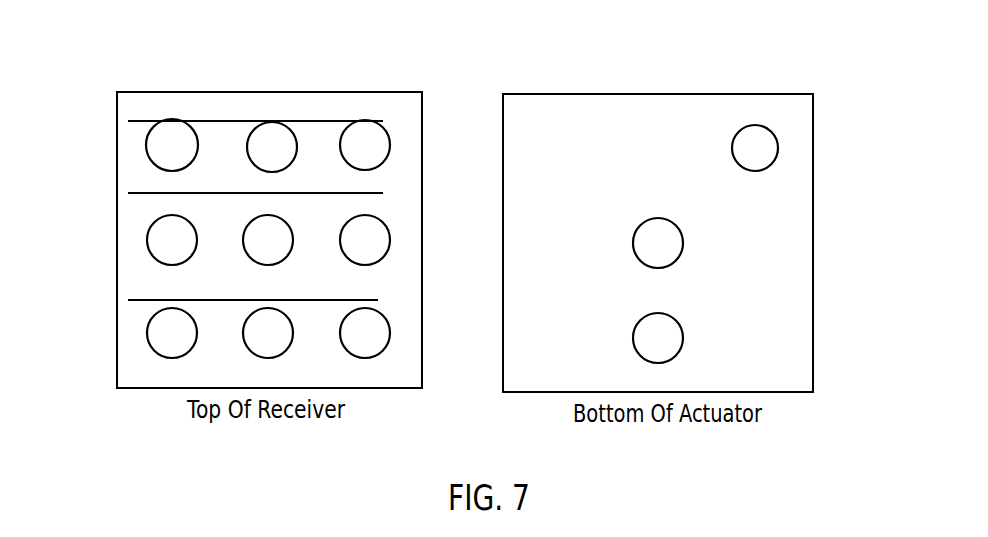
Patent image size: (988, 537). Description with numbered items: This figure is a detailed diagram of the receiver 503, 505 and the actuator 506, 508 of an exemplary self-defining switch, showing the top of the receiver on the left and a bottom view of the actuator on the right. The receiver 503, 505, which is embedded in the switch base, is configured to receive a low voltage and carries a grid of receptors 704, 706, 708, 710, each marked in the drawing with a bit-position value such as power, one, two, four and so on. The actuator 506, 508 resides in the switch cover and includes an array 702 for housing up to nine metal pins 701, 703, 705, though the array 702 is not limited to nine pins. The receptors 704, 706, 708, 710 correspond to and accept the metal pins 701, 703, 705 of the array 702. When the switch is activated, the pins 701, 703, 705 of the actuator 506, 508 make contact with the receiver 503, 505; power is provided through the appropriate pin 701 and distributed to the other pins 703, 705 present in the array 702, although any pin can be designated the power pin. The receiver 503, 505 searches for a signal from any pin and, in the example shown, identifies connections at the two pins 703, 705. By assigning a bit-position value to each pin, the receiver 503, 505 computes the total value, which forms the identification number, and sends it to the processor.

The receiver 503 is at (258, 203).
The receiver 505 is at (258, 203).
The actuator 506 is at (714, 210).
The actuator 508 is at (714, 210).
The metal pin 701 is at (762, 163).
The array 702 is at (814, 122).
The metal pin 703 is at (668, 253).
The receptor 704 is at (275, 140).
The metal pin 705 is at (665, 350).
The receptor 706 is at (380, 153).
The receptor 708 is at (160, 243).
The receptor 710 is at (163, 143).